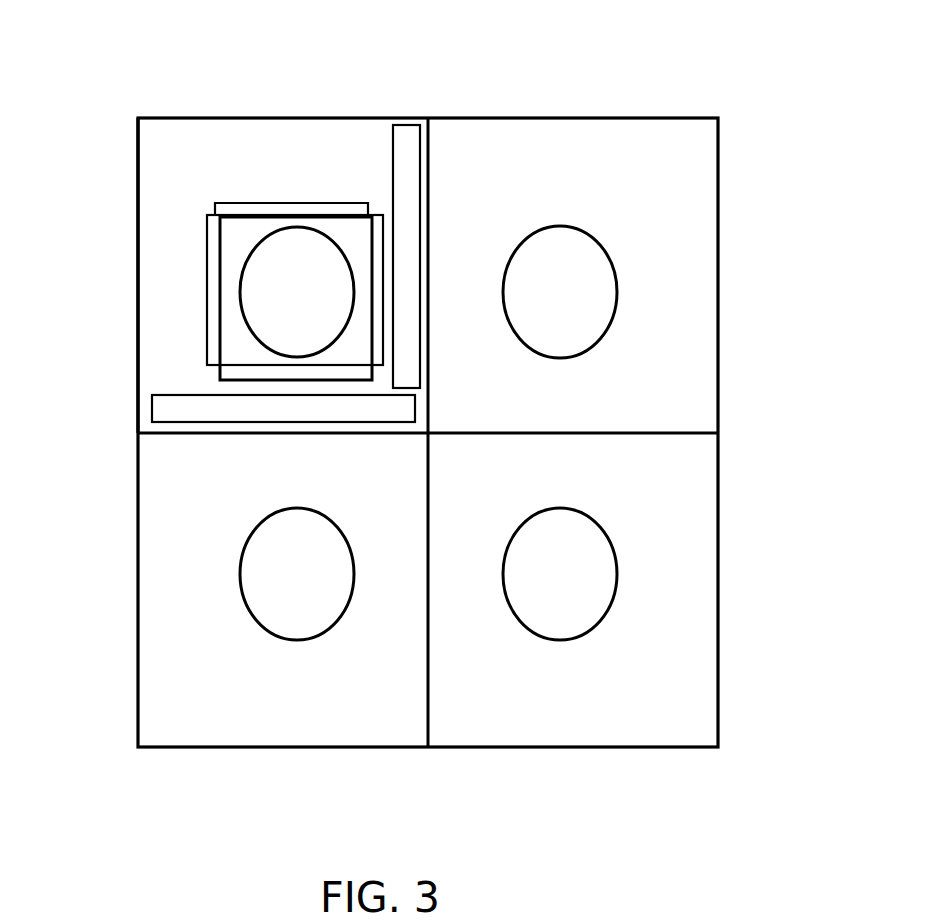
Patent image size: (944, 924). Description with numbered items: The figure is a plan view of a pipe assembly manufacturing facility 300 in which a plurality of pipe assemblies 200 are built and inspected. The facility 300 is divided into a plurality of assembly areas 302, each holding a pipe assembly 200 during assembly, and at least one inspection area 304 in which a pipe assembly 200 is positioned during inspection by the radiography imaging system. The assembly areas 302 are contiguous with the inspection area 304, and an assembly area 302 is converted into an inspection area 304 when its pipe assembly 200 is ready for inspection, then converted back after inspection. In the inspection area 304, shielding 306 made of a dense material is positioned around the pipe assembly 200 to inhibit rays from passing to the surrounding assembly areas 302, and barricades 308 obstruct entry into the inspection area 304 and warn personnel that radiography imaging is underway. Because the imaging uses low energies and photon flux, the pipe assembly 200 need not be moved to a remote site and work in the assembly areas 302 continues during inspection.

The pipe assembly manufacturing facility 300 is at (723, 82).
The assembly areas 302 is at (675, 365).
The inspection area 304 is at (162, 167).
The pipe assembly 200 is at (273, 265).
The shielding 306 is at (378, 222).
The barricades 308 is at (405, 140).